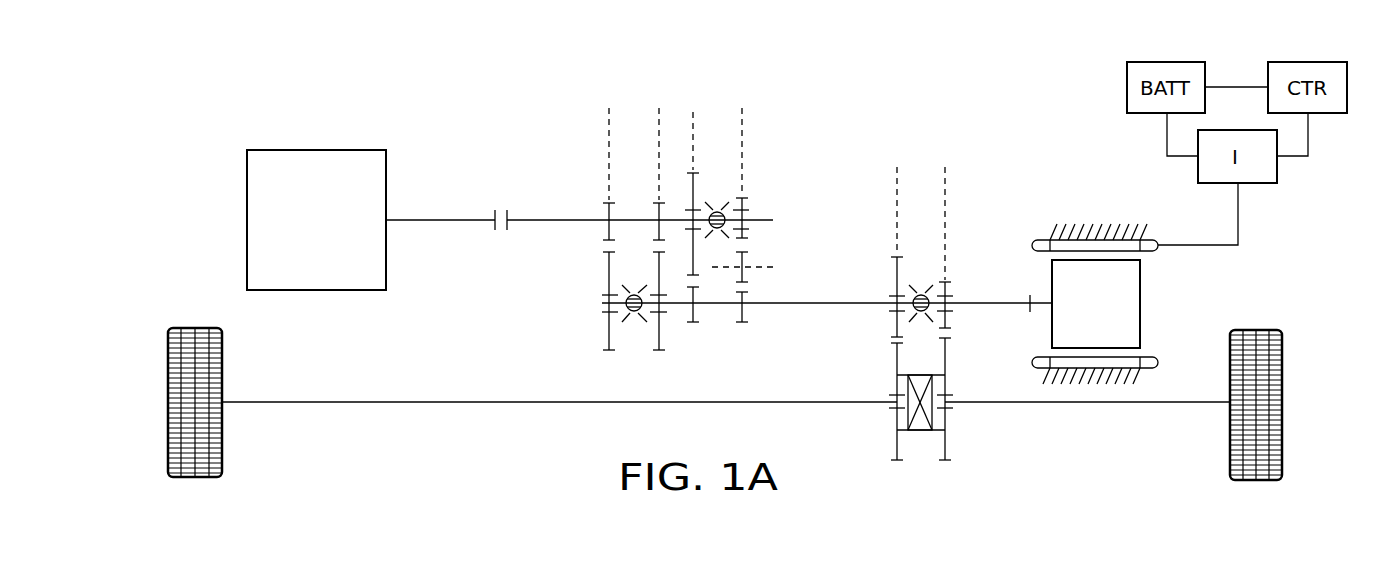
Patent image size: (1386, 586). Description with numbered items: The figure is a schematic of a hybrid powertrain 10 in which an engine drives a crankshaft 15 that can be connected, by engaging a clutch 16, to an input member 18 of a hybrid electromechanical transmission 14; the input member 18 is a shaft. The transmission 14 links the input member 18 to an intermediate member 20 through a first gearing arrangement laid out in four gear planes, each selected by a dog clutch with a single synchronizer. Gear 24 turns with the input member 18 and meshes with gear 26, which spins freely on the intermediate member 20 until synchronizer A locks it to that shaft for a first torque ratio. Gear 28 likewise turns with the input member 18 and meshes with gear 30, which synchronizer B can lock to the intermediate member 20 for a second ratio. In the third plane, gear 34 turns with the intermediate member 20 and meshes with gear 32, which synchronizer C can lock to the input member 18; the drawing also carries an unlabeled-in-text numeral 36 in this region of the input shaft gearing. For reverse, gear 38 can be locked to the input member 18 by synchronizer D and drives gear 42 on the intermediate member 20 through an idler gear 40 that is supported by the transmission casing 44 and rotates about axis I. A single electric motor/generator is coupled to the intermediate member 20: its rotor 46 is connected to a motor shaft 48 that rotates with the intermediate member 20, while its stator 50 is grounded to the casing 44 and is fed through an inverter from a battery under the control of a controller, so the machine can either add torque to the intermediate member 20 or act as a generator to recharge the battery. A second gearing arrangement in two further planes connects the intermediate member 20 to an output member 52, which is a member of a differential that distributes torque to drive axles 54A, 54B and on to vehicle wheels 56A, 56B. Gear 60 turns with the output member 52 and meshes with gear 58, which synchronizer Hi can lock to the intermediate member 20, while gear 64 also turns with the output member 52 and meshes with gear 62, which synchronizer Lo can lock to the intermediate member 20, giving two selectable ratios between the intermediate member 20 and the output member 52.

The hybrid powertrain 10 is at (819, 81).
The hybrid electromechanical transmission 14 is at (839, 109).
The crankshaft 15 is at (440, 217).
The clutch 16 is at (497, 206).
The input member 18 is at (563, 228).
The intermediate member 20 is at (812, 305).
The gear 24 is at (605, 207).
The gear 26 is at (604, 273).
The gear 28 is at (655, 207).
The gear 30 is at (635, 340).
The gear 32 is at (690, 252).
The gear 34 is at (698, 313).
The sixth gear 36 is at (693, 224).
The gear 38 is at (752, 205).
The idler gear 40 is at (748, 274).
The gear 42 is at (747, 313).
The transmission casing 44 is at (1097, 230).
The rotor 46 is at (1142, 305).
The motor shaft 48 is at (1032, 315).
The stator 50 is at (1140, 255).
The output member 52 is at (920, 432).
The drive axle 54A is at (505, 403).
The drive axle 54B is at (1092, 403).
The vehicle wheel 56A is at (195, 327).
The vehicle wheel 56B is at (1256, 330).
The gear 58 is at (893, 283).
The gear 60 is at (897, 363).
The gear 62 is at (950, 288).
The gear 64 is at (948, 445).